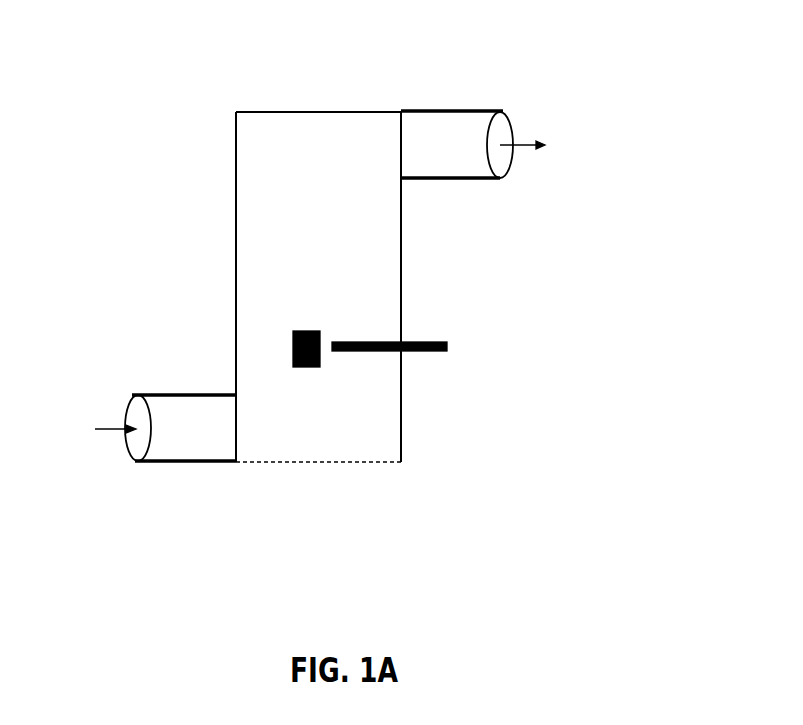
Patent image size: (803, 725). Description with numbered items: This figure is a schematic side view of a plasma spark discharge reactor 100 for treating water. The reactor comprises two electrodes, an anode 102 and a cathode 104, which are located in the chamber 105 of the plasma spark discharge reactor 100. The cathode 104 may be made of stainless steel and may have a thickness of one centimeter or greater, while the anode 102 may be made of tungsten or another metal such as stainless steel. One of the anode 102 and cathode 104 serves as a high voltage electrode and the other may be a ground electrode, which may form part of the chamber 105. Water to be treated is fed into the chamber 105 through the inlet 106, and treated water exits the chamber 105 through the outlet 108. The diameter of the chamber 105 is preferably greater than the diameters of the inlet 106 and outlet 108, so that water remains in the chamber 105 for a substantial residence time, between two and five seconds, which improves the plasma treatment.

The plasma spark discharge reactor 100 is at (183, 125).
The anode 102 is at (422, 342).
The cathode 104 is at (305, 367).
The chamber 105 is at (263, 277).
The inlet 106 is at (138, 441).
The outlet 108 is at (497, 158).